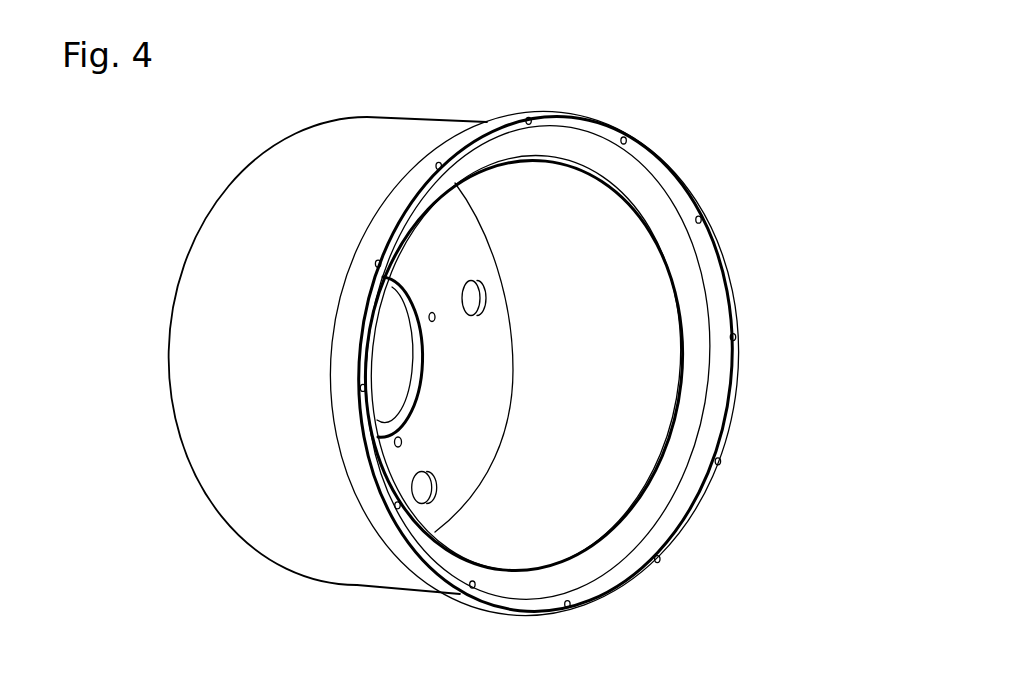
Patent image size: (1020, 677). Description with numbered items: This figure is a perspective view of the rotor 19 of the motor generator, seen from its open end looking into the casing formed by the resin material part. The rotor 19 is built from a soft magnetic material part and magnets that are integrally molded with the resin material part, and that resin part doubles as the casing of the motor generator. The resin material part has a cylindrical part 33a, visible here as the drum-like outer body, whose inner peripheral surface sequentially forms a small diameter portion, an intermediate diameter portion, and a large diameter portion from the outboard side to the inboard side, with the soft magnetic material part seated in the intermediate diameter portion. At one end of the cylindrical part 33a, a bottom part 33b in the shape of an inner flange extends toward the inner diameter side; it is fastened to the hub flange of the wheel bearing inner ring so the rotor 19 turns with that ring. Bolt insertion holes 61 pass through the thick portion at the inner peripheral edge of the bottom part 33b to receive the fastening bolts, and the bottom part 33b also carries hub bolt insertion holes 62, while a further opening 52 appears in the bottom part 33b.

The rotor 19 is at (208, 180).
The cylindrical part 33a is at (240, 315).
The bottom part 33b is at (483, 395).
The hole 52 is at (434, 490).
The bolt insertion holes 61 is at (429, 319).
The hub bolt insertion holes 62 is at (486, 293).